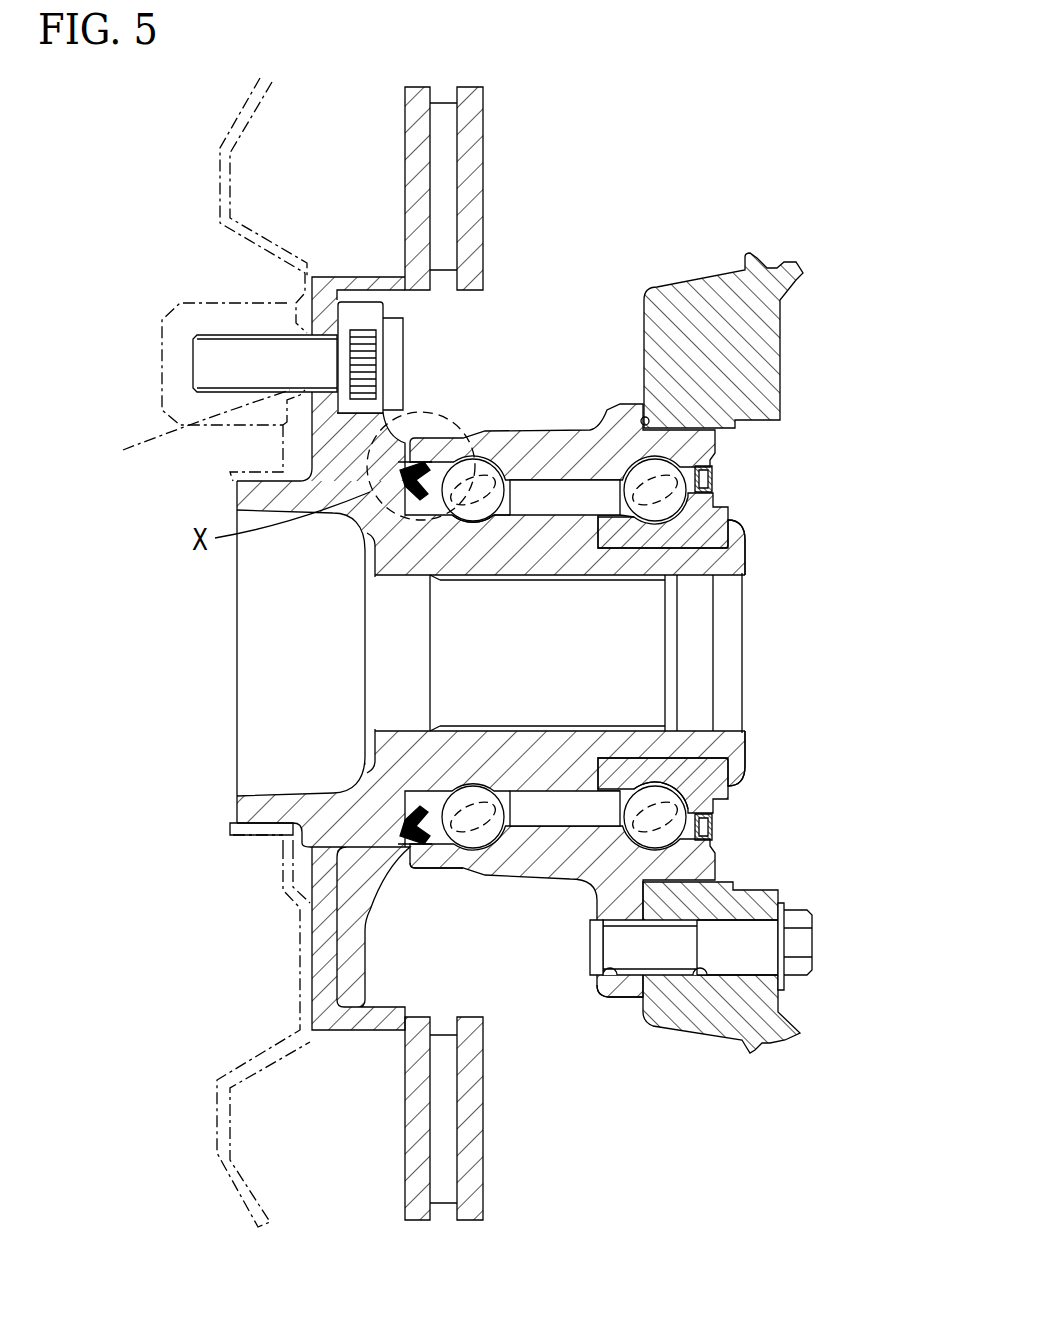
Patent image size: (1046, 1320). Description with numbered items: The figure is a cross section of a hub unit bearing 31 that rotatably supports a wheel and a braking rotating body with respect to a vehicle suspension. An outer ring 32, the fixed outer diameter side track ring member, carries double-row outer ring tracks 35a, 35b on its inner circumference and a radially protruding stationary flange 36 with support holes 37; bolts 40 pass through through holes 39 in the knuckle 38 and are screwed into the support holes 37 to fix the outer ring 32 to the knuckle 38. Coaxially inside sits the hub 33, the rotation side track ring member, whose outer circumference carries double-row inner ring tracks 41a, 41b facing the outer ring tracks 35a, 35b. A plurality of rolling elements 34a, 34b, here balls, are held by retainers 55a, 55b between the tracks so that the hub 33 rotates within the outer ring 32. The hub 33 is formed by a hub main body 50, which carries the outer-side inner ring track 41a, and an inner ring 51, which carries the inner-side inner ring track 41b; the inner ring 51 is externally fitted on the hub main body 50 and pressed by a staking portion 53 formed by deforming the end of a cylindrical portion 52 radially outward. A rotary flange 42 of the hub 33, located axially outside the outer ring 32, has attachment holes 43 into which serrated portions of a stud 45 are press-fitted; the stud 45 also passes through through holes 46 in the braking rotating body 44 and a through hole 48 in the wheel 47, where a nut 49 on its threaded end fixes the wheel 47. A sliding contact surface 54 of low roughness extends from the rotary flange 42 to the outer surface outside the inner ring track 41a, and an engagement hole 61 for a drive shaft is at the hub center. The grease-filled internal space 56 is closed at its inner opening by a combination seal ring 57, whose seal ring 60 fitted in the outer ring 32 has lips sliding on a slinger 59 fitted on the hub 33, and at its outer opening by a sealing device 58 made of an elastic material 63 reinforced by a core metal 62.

The hub unit bearing 31 is at (188, 583).
The outer ring 32 is at (553, 430).
The hub 33 is at (222, 786).
The rolling elements 34a is at (480, 476).
The rolling elements 34b is at (713, 505).
The outer ring track 35a is at (428, 842).
The outer ring track 35b is at (645, 426).
The stationary flange 36 is at (627, 997).
The support holes 37 is at (600, 977).
The knuckle 38 is at (717, 1033).
The through holes 39 is at (700, 970).
The bolts 40 is at (804, 948).
The inner ring track 41a is at (458, 521).
The inner ring track 41b is at (660, 755).
The rotary flange 42 is at (360, 313).
The attachment holes 43 is at (335, 303).
The braking rotating body 44 is at (472, 116).
The stud 45 is at (213, 363).
The through holes 46 is at (312, 352).
The wheel 47 is at (225, 142).
The through hole 48 is at (189, 427).
The nut 49 is at (230, 317).
The hub main body 50 is at (258, 658).
The inner ring 51 is at (683, 538).
The cylindrical portion 52 is at (690, 738).
The staking portion 53 is at (735, 752).
The sliding contact surface 54 is at (262, 833).
The retainer 55a is at (497, 518).
The retainer 55b is at (627, 503).
The internal space 56 is at (560, 503).
The combination seal ring 57 is at (712, 465).
The sealing device 58 is at (417, 440).
The slinger 59 is at (713, 816).
The seal ring 60 is at (712, 838).
The engagement hole 61 is at (460, 713).
The core metal 62 is at (444, 847).
The elastic material 63 is at (413, 850).